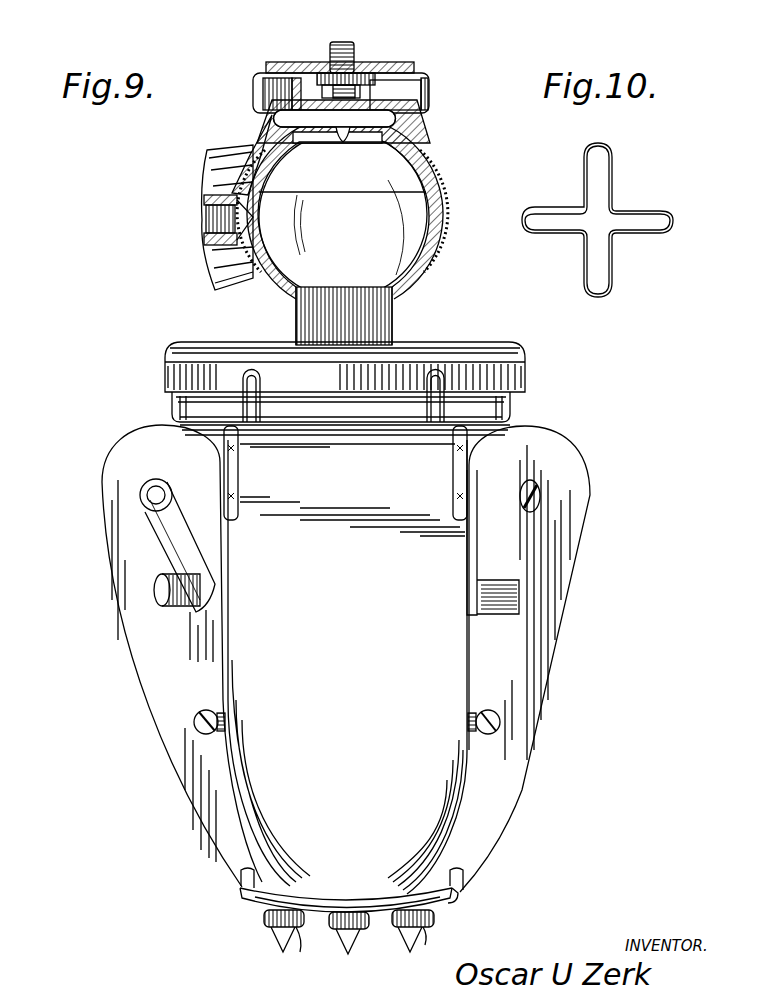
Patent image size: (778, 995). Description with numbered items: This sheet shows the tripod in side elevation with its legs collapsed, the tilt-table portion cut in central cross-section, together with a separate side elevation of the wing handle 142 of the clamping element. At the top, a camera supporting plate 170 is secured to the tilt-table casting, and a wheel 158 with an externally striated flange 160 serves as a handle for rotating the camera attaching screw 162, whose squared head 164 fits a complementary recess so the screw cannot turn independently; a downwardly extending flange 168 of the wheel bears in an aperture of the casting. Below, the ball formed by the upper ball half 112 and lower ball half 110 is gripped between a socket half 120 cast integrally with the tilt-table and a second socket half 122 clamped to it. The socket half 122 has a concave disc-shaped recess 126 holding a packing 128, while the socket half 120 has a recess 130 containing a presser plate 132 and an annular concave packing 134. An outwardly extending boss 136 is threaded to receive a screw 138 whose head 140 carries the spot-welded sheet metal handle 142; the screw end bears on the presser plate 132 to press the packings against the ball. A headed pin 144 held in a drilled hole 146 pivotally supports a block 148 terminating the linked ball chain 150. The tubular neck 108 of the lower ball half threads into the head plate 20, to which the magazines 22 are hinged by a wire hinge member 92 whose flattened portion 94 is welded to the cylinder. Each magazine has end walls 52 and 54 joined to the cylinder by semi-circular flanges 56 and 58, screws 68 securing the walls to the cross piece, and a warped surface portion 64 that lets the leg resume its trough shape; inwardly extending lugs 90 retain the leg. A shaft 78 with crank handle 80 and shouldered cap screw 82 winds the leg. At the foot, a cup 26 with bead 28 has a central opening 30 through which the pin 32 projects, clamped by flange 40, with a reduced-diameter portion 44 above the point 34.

In FIG. 9, the head plate 20 is at (470, 350).
In FIG. 9, the magazine 22 is at (170, 436).
In FIG. 9, the cup 26 is at (268, 903).
In FIG. 9, the bead 28 is at (448, 900).
In FIG. 9, the central opening 30 is at (275, 940).
In FIG. 9, the pin 32 is at (347, 935).
In FIG. 9, the point 34 is at (408, 940).
In FIG. 9, the flange 40 is at (330, 918).
In FIG. 9, the portion of reduced diameter 44 is at (425, 930).
In FIG. 9, the end wall 52 is at (240, 464).
In FIG. 9, the end wall 54 is at (128, 549).
In FIG. 9, the semi-circular flange 56 is at (240, 482).
In FIG. 9, the semi-circular flange 58 is at (457, 475).
In FIG. 9, the warped surface portion 64 is at (240, 866).
In FIG. 9, the screw 68 is at (194, 720).
In FIG. 9, the spindle or shaft 78 is at (148, 495).
In FIG. 9, the crank handle 80 is at (200, 553).
In FIG. 9, the shouldered cap screw 82 is at (542, 498).
In FIG. 9, the lug 90 is at (245, 888).
In FIG. 9, the wire hinge member 92 is at (445, 405).
In FIG. 9, the flattened portion 94 is at (349, 406).
In FIG. 9, the tubular neck 108 is at (375, 328).
In FIG. 9, the lower ball half 110 is at (398, 288).
In FIG. 9, the upper ball half 112 is at (413, 205).
In FIG. 9, the socket half 120 is at (257, 150).
In FIG. 9, the socket half 122 is at (405, 225).
In FIG. 9, the concave disc-shaped recess 126 is at (432, 168).
In FIG. 9, the packing 128 is at (425, 190).
In FIG. 9, the recess 130 is at (220, 182).
In FIG. 9, the presser plate 132 is at (240, 192).
In FIG. 9, the annular concave packing 134 is at (250, 170).
In FIG. 9, the boss 136 is at (205, 258).
In FIG. 9, the screw 138 is at (200, 222).
In FIG. 9, the head 140 is at (202, 240).
In FIG. 9, the handle 142 is at (218, 282).
In FIG. 10, the handle 142 is at (630, 234).
In FIG. 9, the headed pin 144 is at (385, 112).
In FIG. 9, the drilled hole 146 is at (270, 125).
In FIG. 9, the block 148 is at (338, 138).
In FIG. 9, the linked ball chain 150 is at (355, 143).
In FIG. 9, the wheel 158 is at (276, 86).
In FIG. 9, the externally striated flange 160 is at (430, 92).
In FIG. 9, the camera attaching screw 162 is at (354, 47).
In FIG. 9, the squared head 164 is at (322, 78).
In FIG. 9, the downwardly extending flange 168 is at (395, 95).
In FIG. 9, the camera supporting plate 170 is at (410, 65).